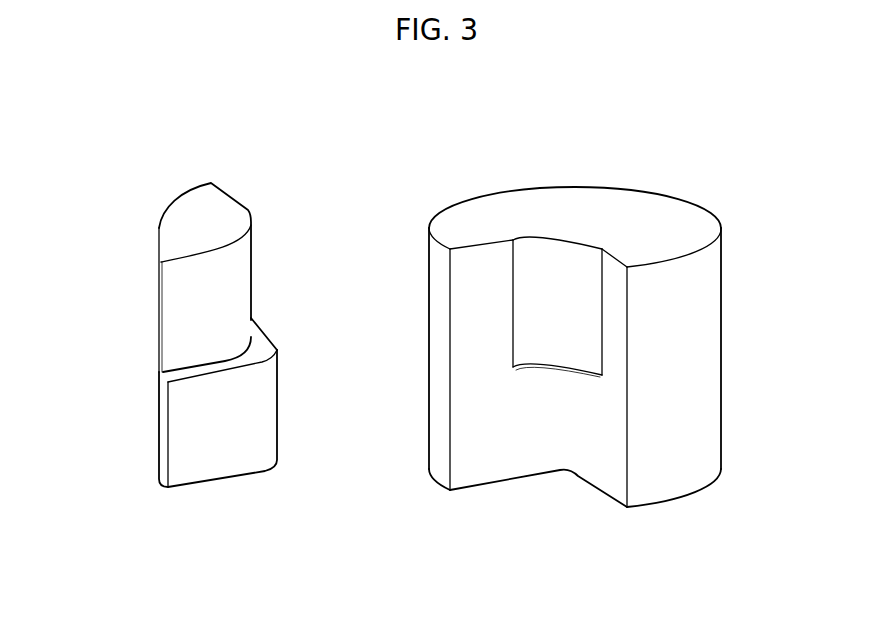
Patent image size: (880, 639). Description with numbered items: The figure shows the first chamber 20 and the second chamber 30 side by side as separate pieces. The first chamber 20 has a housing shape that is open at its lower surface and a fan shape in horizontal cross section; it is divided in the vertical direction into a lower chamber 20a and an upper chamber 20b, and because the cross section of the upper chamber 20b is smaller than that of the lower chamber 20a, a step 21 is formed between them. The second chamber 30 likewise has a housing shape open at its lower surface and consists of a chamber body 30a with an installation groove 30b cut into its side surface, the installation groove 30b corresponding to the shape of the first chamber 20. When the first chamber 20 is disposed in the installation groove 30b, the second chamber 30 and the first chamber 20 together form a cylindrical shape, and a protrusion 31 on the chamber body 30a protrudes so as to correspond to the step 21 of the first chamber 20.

The first chamber 20 is at (181, 335).
The lower chamber 20a is at (183, 438).
The upper chamber 20b is at (180, 328).
The step 21 is at (263, 350).
The second chamber 30 is at (628, 352).
The chamber body 30a is at (710, 428).
The installation groove 30b is at (565, 492).
The protrusion 31 is at (570, 316).